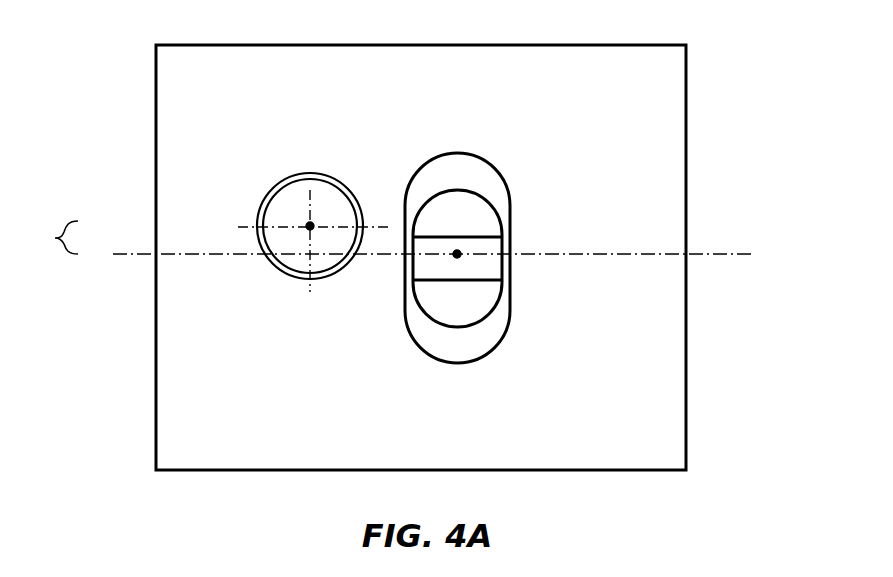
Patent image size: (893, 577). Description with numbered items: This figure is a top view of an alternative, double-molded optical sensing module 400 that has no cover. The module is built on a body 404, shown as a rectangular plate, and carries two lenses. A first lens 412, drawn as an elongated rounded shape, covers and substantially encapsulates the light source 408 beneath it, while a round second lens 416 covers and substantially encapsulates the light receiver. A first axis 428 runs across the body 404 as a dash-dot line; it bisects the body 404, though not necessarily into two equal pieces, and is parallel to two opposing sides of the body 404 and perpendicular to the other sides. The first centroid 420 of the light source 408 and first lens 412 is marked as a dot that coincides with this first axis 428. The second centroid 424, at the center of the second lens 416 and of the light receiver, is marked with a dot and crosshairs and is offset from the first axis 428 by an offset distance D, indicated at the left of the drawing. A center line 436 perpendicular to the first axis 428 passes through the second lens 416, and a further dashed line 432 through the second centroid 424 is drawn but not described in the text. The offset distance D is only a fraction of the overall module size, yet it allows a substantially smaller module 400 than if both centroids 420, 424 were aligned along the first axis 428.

The optical sensing module 400 is at (760, 77).
The body 404 is at (156, 92).
The light source 408 is at (490, 240).
The first lens 412 is at (483, 158).
The second lens 416 is at (274, 192).
The first centroid 420 is at (457, 254).
The second centroid 424 is at (312, 224).
The first axis 428 is at (642, 253).
The aperture center line 432 is at (257, 228).
The center line 436 is at (312, 172).